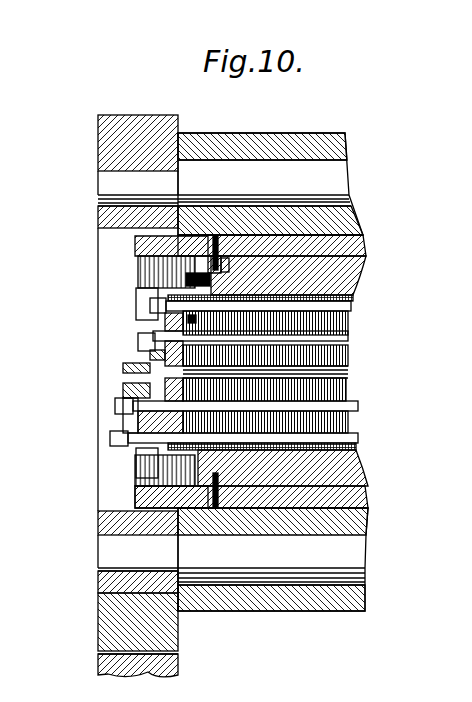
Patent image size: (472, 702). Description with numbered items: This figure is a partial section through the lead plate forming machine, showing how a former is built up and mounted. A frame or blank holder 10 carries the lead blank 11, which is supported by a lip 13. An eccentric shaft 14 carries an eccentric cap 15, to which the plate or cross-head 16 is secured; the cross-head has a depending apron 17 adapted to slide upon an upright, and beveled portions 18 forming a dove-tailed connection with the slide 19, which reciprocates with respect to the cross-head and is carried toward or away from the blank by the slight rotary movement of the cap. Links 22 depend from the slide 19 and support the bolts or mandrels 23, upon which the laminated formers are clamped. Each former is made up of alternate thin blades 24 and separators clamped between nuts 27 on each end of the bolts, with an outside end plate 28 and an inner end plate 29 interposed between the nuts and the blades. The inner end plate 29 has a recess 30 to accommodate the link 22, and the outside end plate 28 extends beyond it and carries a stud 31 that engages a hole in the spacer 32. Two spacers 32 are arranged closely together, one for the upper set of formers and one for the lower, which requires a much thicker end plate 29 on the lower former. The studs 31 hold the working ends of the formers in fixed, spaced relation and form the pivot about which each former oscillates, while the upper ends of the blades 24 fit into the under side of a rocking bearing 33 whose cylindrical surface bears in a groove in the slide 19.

The frame or blank holder 10 is at (132, 329).
The lead blank 11 is at (341, 365).
The lip 13 is at (123, 451).
The eccentric shaft 14 is at (95, 165).
The eccentric cap 15 is at (283, 126).
The plate or cross-head 16 is at (358, 233).
The depending apron 17 is at (133, 265).
The beveled portions 18 is at (130, 255).
The slide 19 is at (354, 265).
The links 22 is at (134, 276).
The bolts or mandrels 23 is at (344, 300).
The blades 24 is at (341, 341).
The nuts 27 is at (147, 318).
The outside end plate 28 is at (143, 292).
The inner end plate 29 is at (222, 258).
The recess 30 is at (215, 258).
The stud 31 is at (120, 365).
The spacer 32 is at (141, 345).
The rocking bearing 33 is at (346, 282).